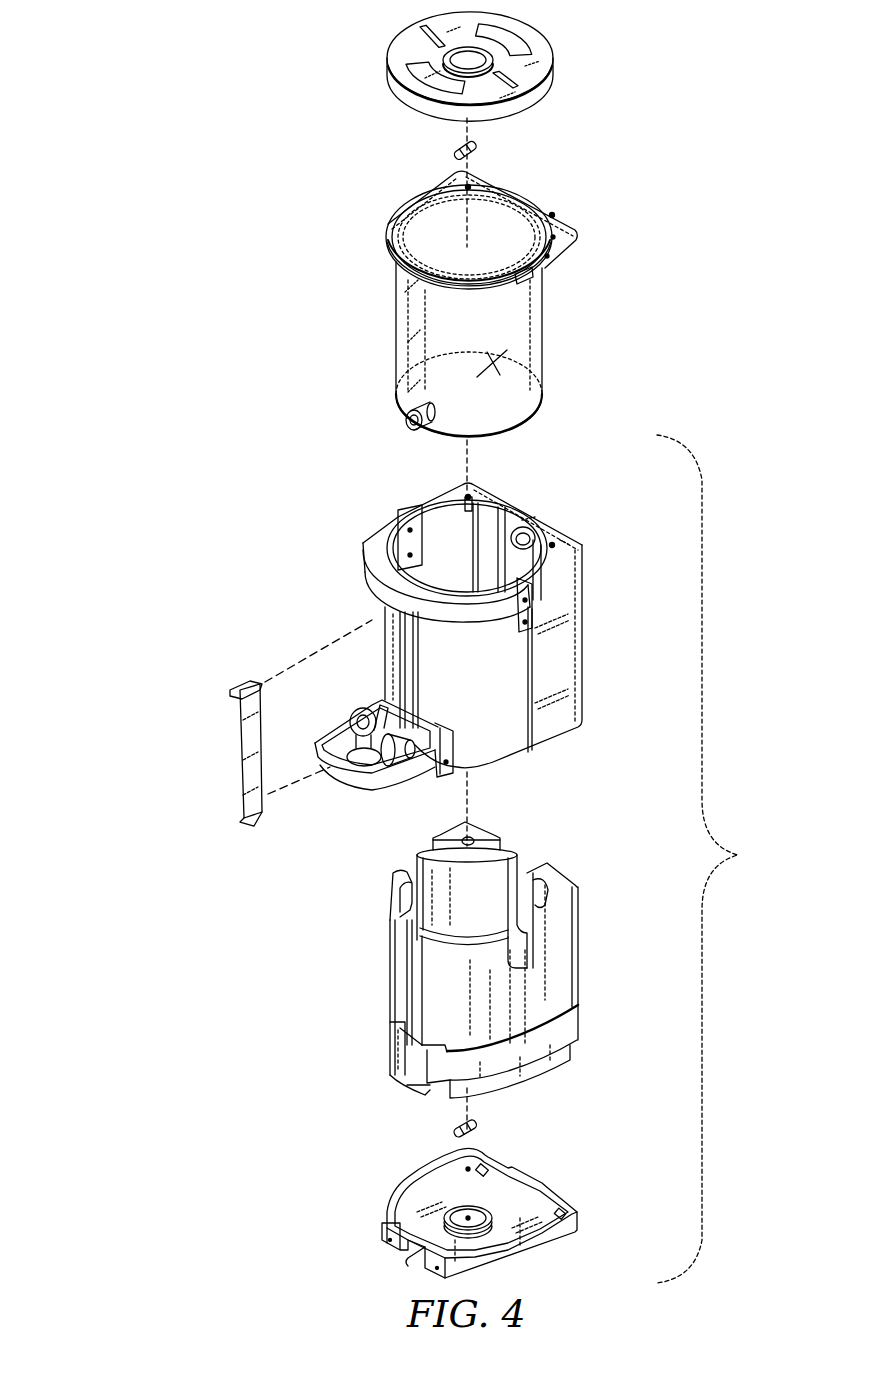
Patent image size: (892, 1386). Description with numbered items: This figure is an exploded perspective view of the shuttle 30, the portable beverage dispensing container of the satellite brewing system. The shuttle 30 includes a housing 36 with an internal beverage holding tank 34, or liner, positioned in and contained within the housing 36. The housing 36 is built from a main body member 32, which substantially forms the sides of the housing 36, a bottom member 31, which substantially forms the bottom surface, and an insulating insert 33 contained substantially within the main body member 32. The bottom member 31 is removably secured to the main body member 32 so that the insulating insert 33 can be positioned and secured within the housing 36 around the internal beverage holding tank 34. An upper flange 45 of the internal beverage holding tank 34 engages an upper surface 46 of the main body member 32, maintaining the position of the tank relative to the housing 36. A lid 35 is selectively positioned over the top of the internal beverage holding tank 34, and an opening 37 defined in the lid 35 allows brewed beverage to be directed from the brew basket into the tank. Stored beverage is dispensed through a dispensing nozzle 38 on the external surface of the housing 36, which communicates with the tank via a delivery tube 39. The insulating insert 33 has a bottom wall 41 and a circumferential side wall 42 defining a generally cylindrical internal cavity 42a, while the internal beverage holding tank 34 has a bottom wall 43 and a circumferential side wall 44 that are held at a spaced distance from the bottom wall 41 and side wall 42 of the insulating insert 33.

The shuttle 30 is at (178, 82).
The bottom member 31 is at (583, 1216).
The main body member 32 is at (504, 618).
The insulating insert 33 is at (478, 957).
The internal beverage holding tank 34 is at (504, 304).
The lid 35 is at (492, 66).
The housing 36 is at (738, 855).
The opening 37 is at (412, 56).
The dispensing nozzle 38 is at (375, 769).
The delivery tube 39 is at (398, 774).
The bottom wall 41 is at (413, 1050).
The circumferential side wall 42 is at (390, 948).
The internal cavity 42a is at (487, 866).
The bottom wall 43 is at (513, 427).
The circumferential side wall 44 is at (543, 340).
The upper flange 45 is at (562, 236).
The upper surface 46 is at (565, 547).